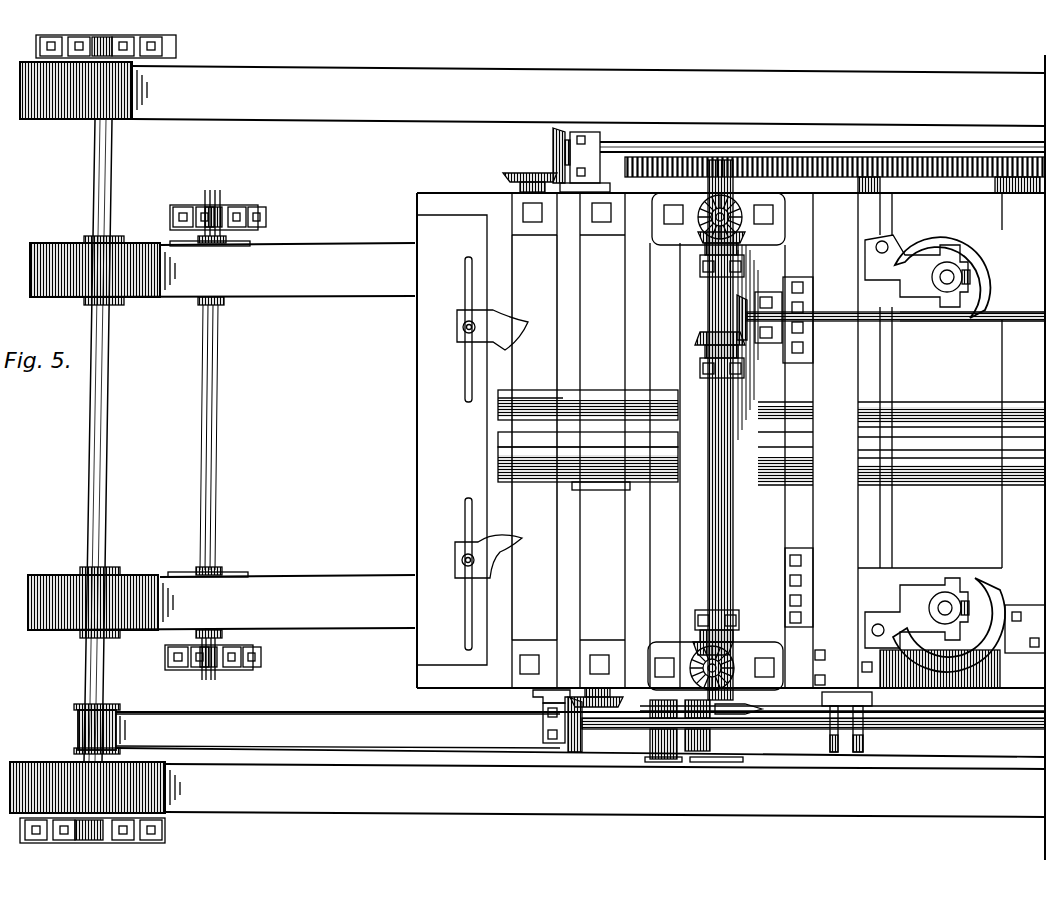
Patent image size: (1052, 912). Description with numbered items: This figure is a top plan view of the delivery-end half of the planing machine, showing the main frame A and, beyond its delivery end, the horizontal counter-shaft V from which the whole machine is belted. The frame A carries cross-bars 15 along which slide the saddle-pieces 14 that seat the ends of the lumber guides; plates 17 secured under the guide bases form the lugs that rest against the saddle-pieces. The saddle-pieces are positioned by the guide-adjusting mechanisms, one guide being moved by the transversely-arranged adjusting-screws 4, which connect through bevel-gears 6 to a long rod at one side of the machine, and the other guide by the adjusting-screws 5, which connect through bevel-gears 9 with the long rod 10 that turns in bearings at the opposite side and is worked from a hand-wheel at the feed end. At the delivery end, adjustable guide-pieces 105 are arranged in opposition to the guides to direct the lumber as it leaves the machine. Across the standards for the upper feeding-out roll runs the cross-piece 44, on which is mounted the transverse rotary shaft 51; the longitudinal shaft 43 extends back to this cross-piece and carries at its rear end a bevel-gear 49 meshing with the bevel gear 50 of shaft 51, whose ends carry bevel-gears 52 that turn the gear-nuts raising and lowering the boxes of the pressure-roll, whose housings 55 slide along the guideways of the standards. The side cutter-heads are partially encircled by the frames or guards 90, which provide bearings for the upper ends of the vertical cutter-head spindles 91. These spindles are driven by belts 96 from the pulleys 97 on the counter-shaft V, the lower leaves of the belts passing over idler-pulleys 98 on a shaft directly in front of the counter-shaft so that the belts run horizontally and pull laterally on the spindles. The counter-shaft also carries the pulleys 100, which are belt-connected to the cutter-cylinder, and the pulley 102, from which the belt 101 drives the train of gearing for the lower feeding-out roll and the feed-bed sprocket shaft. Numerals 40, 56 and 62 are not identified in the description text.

The adjusting-screws 4 is at (620, 705).
The adjusting-screws 5 is at (515, 184).
The bevel-gears 6 is at (586, 728).
The bevel-gears 9 is at (556, 147).
The long rod 10 is at (626, 150).
The slides or saddle-pieces 14 is at (556, 398).
The cross-bars 15 is at (562, 437).
The plates 17 is at (930, 738).
The bearing 40 is at (896, 452).
The shaft 43 is at (932, 320).
The cross-piece 44 is at (745, 496).
The bevel-gear 49 is at (736, 311).
The bevel gear 50 is at (696, 338).
The rotary shaft 51 is at (708, 540).
The bevel-gears 52 is at (705, 236).
The housings 55 is at (706, 215).
The bearing plate 56 is at (730, 216).
The bevel gear 62 is at (696, 642).
The frames or guards 90 is at (949, 446).
The cutter-head spindles 91 is at (940, 274).
The belts 96 is at (222, 436).
The pulleys 97 is at (101, 437).
The idler-pulleys 98 is at (215, 435).
The pulleys 100 is at (95, 439).
The belt 101 is at (338, 731).
The pulley 102 is at (81, 729).
The adjustable guide-pieces 105 is at (491, 444).
The main frame A is at (711, 440).
The counter-shaft V is at (155, 433).